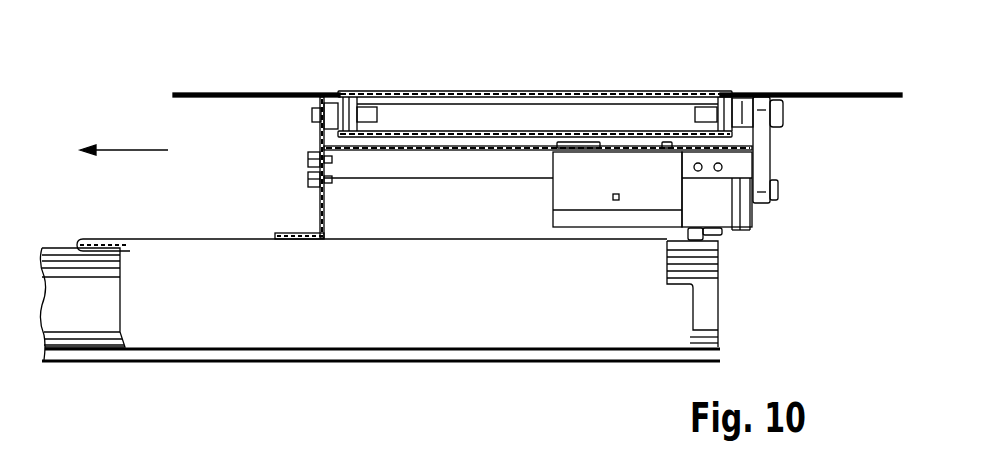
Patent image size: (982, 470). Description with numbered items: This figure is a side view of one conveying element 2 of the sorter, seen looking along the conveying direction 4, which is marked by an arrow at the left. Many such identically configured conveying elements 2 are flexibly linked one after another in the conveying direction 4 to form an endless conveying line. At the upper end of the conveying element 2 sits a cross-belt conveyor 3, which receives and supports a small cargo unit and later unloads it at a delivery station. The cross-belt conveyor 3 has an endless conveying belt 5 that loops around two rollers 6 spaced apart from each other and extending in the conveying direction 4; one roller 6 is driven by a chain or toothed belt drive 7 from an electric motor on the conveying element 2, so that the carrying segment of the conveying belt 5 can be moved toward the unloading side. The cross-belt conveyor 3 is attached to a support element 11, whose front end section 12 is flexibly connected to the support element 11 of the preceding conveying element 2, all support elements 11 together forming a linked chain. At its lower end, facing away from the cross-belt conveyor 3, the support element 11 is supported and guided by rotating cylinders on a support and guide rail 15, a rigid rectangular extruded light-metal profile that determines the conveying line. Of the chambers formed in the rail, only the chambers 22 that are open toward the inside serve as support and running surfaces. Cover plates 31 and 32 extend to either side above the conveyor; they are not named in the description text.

The conveying element 2 is at (572, 76).
The cross-belt conveyor 3 is at (526, 77).
The conveying direction 4 is at (140, 150).
The conveying belt 5 is at (462, 91).
The roller 6 is at (404, 117).
The chain or toothed belt drive 7 is at (763, 158).
The support element 11 is at (541, 194).
The front end section 12 is at (86, 228).
The support and guide rail 15 is at (108, 366).
The chamber 22 is at (72, 308).
The left cover plate 31 is at (228, 92).
The right cover plate 32 is at (856, 92).